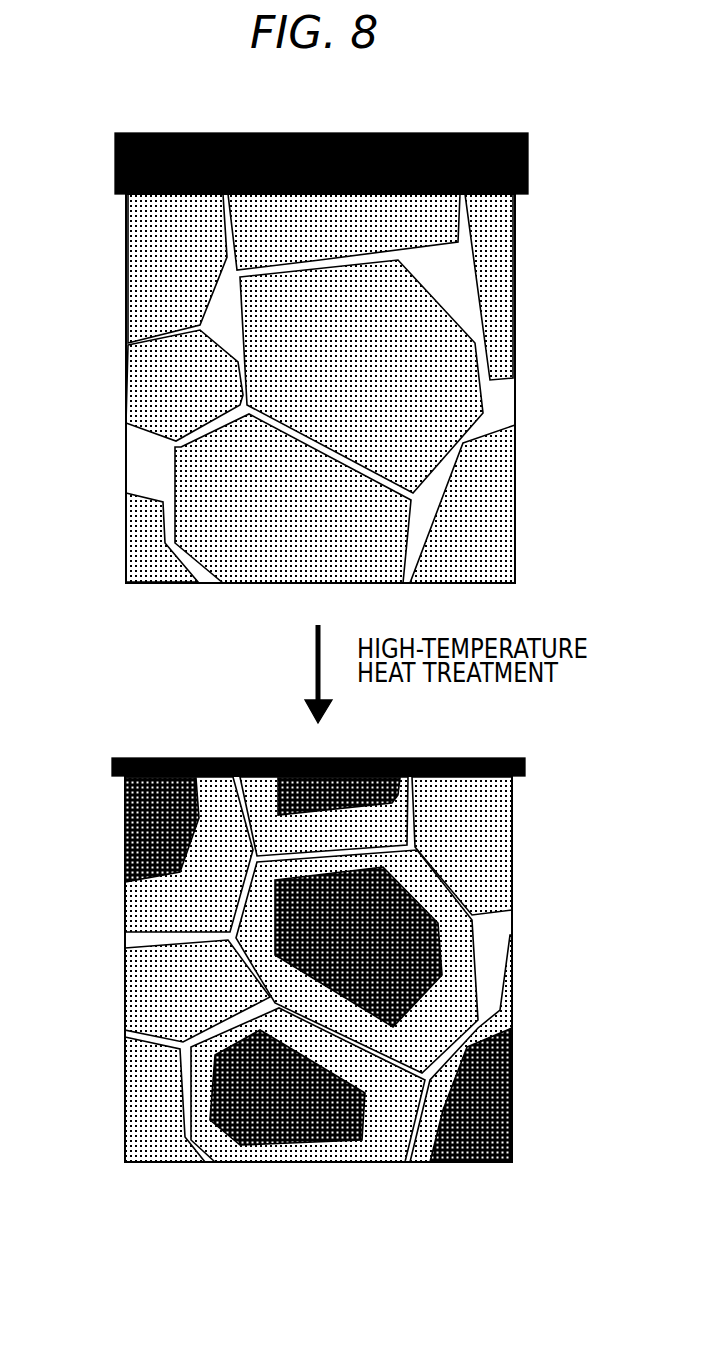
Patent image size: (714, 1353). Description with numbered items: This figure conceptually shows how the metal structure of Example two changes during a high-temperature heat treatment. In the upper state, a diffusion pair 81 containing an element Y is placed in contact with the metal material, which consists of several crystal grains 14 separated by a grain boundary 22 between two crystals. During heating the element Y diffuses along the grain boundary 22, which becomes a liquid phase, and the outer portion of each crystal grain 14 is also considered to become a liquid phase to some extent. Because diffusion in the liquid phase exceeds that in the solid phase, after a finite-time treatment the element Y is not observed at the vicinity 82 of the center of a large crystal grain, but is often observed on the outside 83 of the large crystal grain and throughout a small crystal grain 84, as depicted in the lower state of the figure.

The diffusion pair 81 is at (528, 160).
The grain boundary between two crystals 22 is at (227, 227).
The crystal grain 14 is at (420, 382).
The vicinity of center of large crystal grain 82 is at (410, 945).
The outside of large crystal grain 83 is at (450, 1013).
The small crystal grain 84 is at (158, 1010).